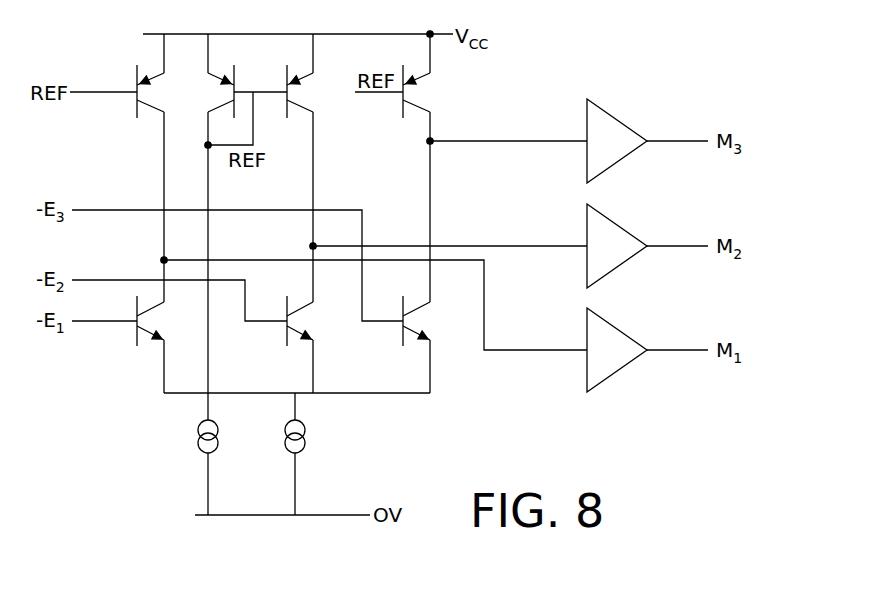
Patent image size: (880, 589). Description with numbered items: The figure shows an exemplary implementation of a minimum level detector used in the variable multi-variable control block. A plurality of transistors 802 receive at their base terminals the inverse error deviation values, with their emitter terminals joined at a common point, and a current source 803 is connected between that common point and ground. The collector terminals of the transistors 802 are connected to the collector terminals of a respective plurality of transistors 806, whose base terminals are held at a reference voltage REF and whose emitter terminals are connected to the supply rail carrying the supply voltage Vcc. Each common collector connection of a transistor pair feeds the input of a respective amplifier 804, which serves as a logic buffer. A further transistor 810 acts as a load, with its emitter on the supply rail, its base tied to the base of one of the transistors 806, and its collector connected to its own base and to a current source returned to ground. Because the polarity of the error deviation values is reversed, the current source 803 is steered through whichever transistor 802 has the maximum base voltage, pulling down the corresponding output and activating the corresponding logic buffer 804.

The transistors 806 is at (247, 86).
The transistor 810 is at (216, 106).
The transistors 802 is at (252, 330).
The current source 803 is at (305, 446).
The amplifiers 804 is at (647, 235).